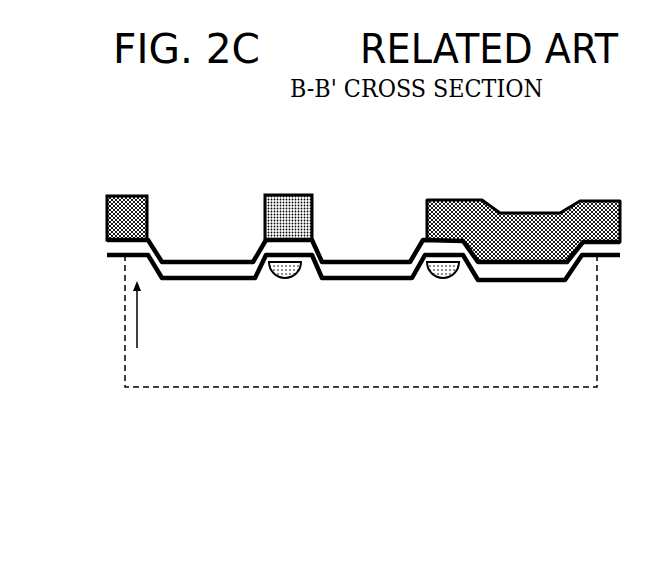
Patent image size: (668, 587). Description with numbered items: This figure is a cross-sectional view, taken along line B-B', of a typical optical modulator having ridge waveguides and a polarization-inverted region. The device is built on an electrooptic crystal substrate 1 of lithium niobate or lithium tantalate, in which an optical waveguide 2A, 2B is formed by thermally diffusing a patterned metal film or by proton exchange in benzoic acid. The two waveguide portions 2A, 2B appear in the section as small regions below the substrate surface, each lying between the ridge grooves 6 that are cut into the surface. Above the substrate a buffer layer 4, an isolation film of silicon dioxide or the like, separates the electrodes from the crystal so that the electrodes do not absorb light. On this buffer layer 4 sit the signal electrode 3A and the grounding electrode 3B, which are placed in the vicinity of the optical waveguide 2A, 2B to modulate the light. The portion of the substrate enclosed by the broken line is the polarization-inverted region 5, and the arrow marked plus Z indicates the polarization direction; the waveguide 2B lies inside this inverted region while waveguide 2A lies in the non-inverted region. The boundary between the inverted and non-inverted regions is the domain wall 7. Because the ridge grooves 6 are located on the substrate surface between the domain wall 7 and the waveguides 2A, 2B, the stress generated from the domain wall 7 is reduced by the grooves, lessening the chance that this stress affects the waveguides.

The crystal substrate 1 is at (642, 335).
The optical waveguide 2A is at (446, 277).
The optical waveguide 2B is at (289, 277).
The signal electrode 3A is at (285, 195).
The grounding electrode 3B is at (356, 211).
The buffer layer 4 is at (312, 258).
The polarization-inverted region 5 is at (515, 335).
The ridge grooves 6 is at (487, 290).
The domain wall 7 is at (597, 335).